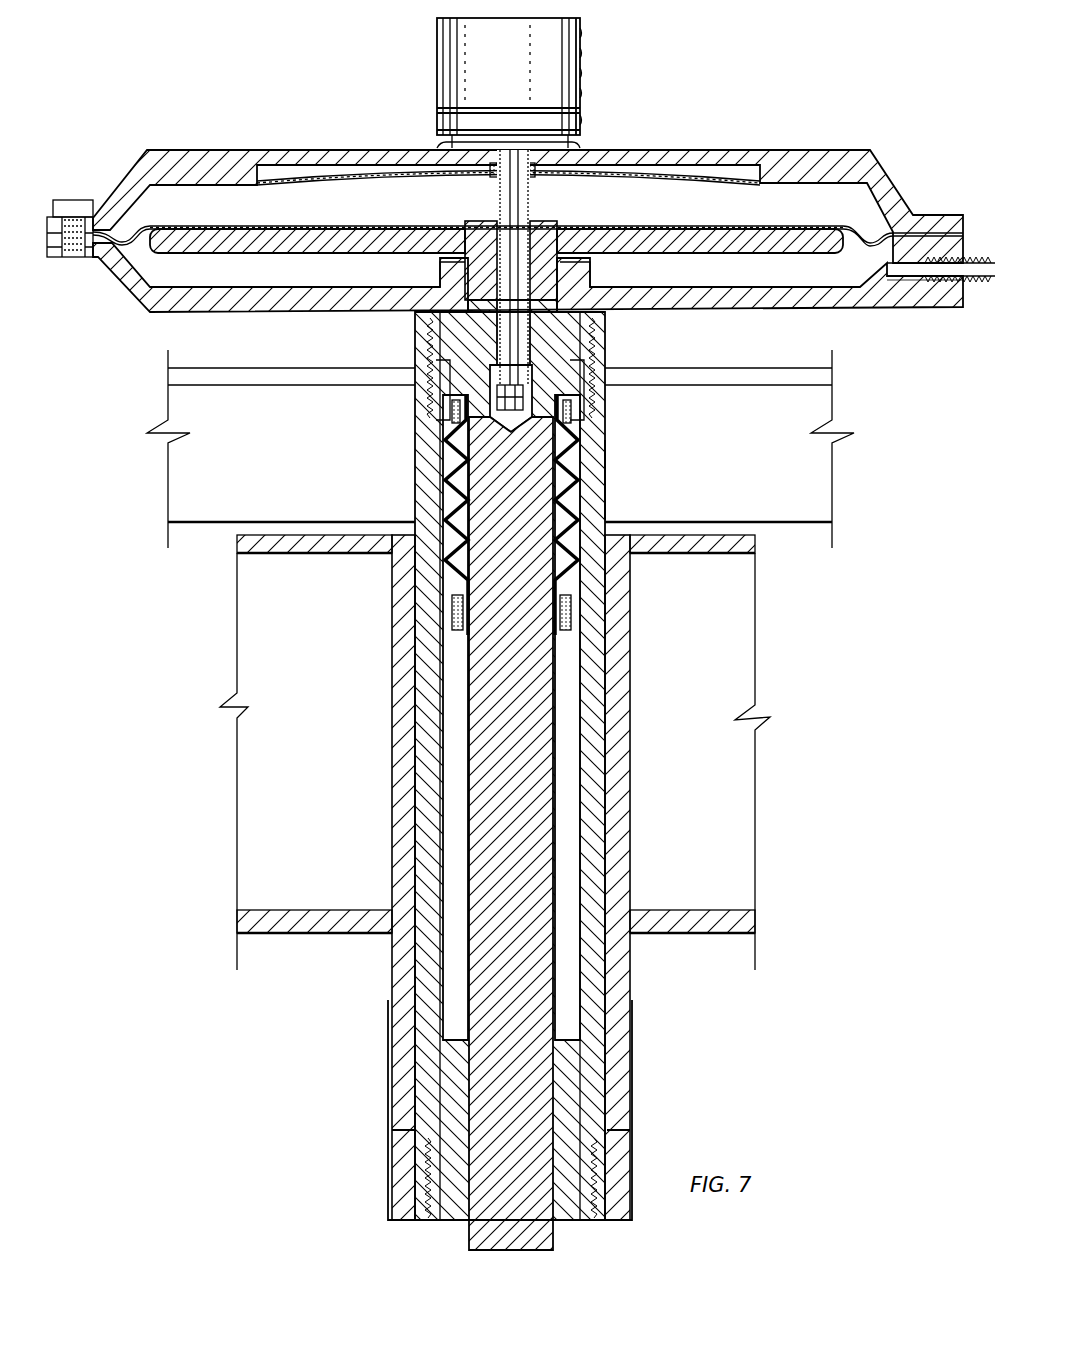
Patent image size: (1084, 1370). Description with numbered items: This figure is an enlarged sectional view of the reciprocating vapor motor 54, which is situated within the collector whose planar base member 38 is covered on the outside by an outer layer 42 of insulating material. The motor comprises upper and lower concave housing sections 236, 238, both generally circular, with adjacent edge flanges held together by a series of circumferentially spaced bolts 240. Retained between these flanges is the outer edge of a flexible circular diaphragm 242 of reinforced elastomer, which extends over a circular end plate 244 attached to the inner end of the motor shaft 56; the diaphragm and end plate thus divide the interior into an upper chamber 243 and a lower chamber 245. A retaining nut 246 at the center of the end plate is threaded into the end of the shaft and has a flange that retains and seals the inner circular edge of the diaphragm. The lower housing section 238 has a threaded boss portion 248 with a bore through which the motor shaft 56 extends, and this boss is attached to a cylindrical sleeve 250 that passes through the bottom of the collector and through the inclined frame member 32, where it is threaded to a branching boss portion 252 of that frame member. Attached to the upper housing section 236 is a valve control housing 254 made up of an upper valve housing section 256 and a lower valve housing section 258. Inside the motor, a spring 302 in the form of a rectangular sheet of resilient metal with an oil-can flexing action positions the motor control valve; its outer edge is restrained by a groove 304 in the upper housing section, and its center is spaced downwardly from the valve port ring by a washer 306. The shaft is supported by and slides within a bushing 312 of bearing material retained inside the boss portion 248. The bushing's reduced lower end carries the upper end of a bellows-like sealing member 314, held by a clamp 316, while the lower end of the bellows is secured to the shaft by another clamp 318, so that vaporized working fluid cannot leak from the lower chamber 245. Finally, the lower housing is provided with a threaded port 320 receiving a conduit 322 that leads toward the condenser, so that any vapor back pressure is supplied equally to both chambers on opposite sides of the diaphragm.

The inclined frame member 32 is at (333, 907).
The planar base member 38 is at (366, 367).
The outer layer 42 is at (797, 490).
The reciprocating vapor motor 54 is at (606, 463).
The motor shaft 56 is at (540, 715).
The upper housing section 236 is at (605, 150).
The lower housing section 238 is at (840, 300).
The bolts 240 is at (85, 200).
The flexible circular diaphragm 242 is at (870, 240).
The upper chamber 243 is at (350, 207).
The circular end plate 244 is at (712, 250).
The lower chamber 245 is at (785, 276).
The retaining nut 246 is at (535, 222).
The threaded boss portion 248 is at (593, 338).
The cylindrical sleeve 250 is at (415, 487).
The branching boss portion 252 is at (393, 1148).
The valve control housing 254 is at (458, 63).
The upper valve housing section 256 is at (583, 72).
The lower valve housing section 258 is at (585, 125).
The spring 302 is at (712, 178).
The groove 304 is at (778, 175).
The washer 306 is at (470, 174).
The bushing 312 is at (457, 292).
The bellows-like sealing member 314 is at (570, 513).
The clamp 316 is at (572, 406).
The clamp 318 is at (567, 608).
The port 320 is at (905, 272).
The conduit 322 is at (968, 260).